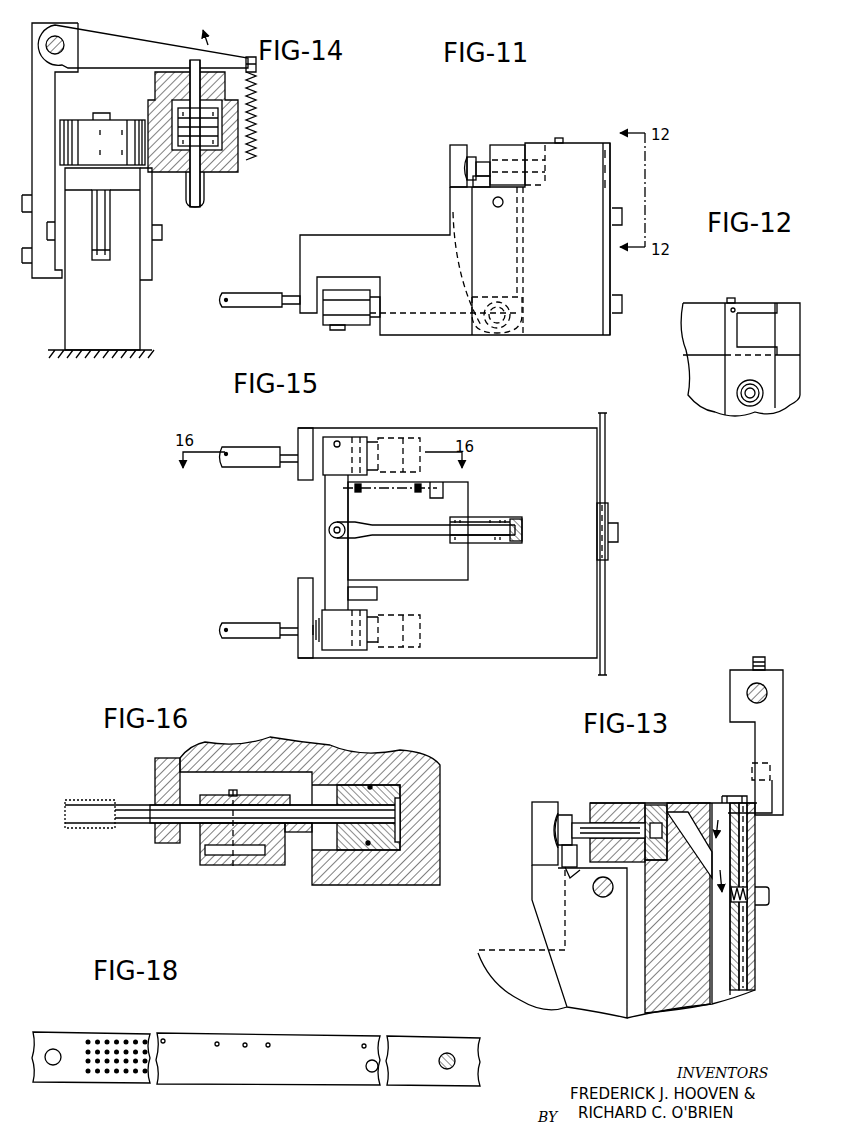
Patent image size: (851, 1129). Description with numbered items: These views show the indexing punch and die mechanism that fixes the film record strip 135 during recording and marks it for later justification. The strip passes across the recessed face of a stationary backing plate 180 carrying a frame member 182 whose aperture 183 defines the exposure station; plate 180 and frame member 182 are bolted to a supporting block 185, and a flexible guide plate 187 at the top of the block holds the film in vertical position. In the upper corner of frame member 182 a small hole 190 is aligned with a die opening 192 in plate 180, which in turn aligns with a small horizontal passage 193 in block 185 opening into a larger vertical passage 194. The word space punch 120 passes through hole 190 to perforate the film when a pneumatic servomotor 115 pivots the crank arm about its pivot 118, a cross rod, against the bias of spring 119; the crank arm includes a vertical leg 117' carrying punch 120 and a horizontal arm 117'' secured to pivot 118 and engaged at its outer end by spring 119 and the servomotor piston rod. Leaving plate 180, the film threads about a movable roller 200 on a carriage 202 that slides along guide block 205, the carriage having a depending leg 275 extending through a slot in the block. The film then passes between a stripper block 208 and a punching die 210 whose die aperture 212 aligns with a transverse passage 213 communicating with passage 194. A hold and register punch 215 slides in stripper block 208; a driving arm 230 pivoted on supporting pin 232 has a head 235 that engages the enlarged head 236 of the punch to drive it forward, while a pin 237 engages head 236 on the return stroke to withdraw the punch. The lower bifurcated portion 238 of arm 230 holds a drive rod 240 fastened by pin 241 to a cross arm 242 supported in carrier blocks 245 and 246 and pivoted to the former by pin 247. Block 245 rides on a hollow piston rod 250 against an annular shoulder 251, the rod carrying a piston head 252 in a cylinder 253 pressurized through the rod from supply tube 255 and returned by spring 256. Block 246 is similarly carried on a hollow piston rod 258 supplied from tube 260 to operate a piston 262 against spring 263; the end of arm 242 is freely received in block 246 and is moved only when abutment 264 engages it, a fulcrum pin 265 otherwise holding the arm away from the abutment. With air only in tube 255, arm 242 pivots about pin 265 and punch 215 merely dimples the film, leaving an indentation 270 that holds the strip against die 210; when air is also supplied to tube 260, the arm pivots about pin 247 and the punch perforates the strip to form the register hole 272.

In FIG. 14, the pneumatic servomotor 115 is at (214, 186).
In FIG. 13, the vertical leg of crank arm 117' is at (729, 742).
In FIG. 14, the horizontal arm of crank arm 117'' is at (143, 59).
In FIG. 14, the pivot 118 is at (68, 47).
In FIG. 13, the pivot 118 is at (750, 686).
In FIG. 14, the spring 119 is at (252, 108).
In FIG. 13, the word space punch 120 is at (770, 813).
In FIG. 14, the film record strip 135 is at (82, 128).
In FIG. 11, the film record strip 135 is at (604, 163).
In FIG. 12, the film record strip 135 is at (695, 333).
In FIG. 15, the film record strip 135 is at (605, 418).
In FIG. 13, the film record strip 135 is at (745, 848).
In FIG. 18, the film record strip 135 is at (235, 1083).
In FIG. 11, the backing plate 180 is at (612, 272).
In FIG. 12, the backing plate 180 is at (693, 378).
In FIG. 15, the backing plate 180 is at (608, 508).
In FIG. 13, the backing plate 180 is at (744, 988).
In FIG. 11, the frame member 182 is at (611, 337).
In FIG. 12, the frame member 182 is at (737, 410).
In FIG. 15, the frame member 182 is at (608, 555).
In FIG. 13, the frame member 182 is at (754, 958).
In FIG. 12, the aperture 183 is at (757, 312).
In FIG. 11, the supporting block 185 is at (560, 328).
In FIG. 12, the supporting block 185 is at (783, 414).
In FIG. 13, the supporting block 185 is at (665, 998).
In FIG. 11, the guide plate 187 is at (588, 142).
In FIG. 12, the guide plate 187 is at (737, 300).
In FIG. 13, the guide plate 187 is at (702, 803).
In FIG. 12, the hole 190 is at (731, 309).
In FIG. 13, the die opening 192 is at (740, 802).
In FIG. 13, the horizontal passage 193 is at (718, 838).
In FIG. 13, the vertical passage 194 is at (746, 903).
In FIG. 14, the movable roller 200 is at (120, 130).
In FIG. 14, the carriage 202 is at (103, 268).
In FIG. 14, the guide block 205 is at (135, 305).
In FIG. 11, the stripper block 208 is at (508, 146).
In FIG. 13, the stripper block 208 is at (613, 808).
In FIG. 13, the punching die 210 is at (658, 815).
In FIG. 13, the die aperture 212 is at (647, 880).
In FIG. 13, the transverse passage 213 is at (677, 833).
In FIG. 11, the hold and register punch 215 is at (483, 158).
In FIG. 13, the hold and register punch 215 is at (585, 822).
In FIG. 11, the driving arm 230 is at (450, 212).
In FIG. 15, the driving arm 230 is at (497, 515).
In FIG. 13, the driving arm 230 is at (548, 925).
In FIG. 11, the supporting pin 232 is at (500, 205).
In FIG. 13, the supporting pin 232 is at (592, 888).
In FIG. 11, the head 235 is at (456, 148).
In FIG. 13, the head 235 is at (540, 810).
In FIG. 11, the enlarged head 236 is at (468, 165).
In FIG. 13, the enlarged head 236 is at (560, 833).
In FIG. 11, the pin 237 is at (472, 180).
In FIG. 13, the pin 237 is at (572, 855).
In FIG. 11, the bifurcated portion 238 is at (505, 293).
In FIG. 15, the bifurcated portion 238 is at (497, 543).
In FIG. 11, the drive rod 240 is at (425, 318).
In FIG. 15, the drive rod 240 is at (428, 536).
In FIG. 15, the pin 241 is at (330, 530).
In FIG. 15, the cross arm 242 is at (328, 557).
In FIG. 16, the cross arm 242 is at (205, 850).
In FIG. 11, the carrier block 245 is at (358, 328).
In FIG. 15, the carrier block 245 is at (333, 437).
In FIG. 16, the carrier block 245 is at (263, 866).
In FIG. 15, the carrier block 246 is at (345, 650).
In FIG. 15, the pin 247 is at (340, 444).
In FIG. 16, the pin 247 is at (235, 868).
In FIG. 15, the hollow piston rod 250 is at (290, 452).
In FIG. 16, the hollow piston rod 250 is at (130, 826).
In FIG. 16, the annular shoulder 251 is at (290, 830).
In FIG. 15, the piston head 252 is at (418, 438).
In FIG. 16, the piston head 252 is at (388, 842).
In FIG. 16, the cylinder 253 is at (330, 850).
In FIG. 11, the supply tube 255 is at (245, 307).
In FIG. 15, the supply tube 255 is at (240, 462).
In FIG. 16, the supply tube 255 is at (85, 803).
In FIG. 15, the return spring 256 is at (363, 494).
In FIG. 15, the hollow piston rod 258 is at (290, 640).
In FIG. 15, the tube 260 is at (240, 625).
In FIG. 15, the piston 262 is at (405, 650).
In FIG. 15, the spring 263 is at (318, 648).
In FIG. 15, the abutment 264 is at (365, 612).
In FIG. 15, the fulcrum pin 265 is at (363, 590).
In FIG. 18, the indentation 270 is at (449, 1050).
In FIG. 18, the register hole 272 is at (59, 1044).
In FIG. 14, the depending leg 275 is at (103, 245).